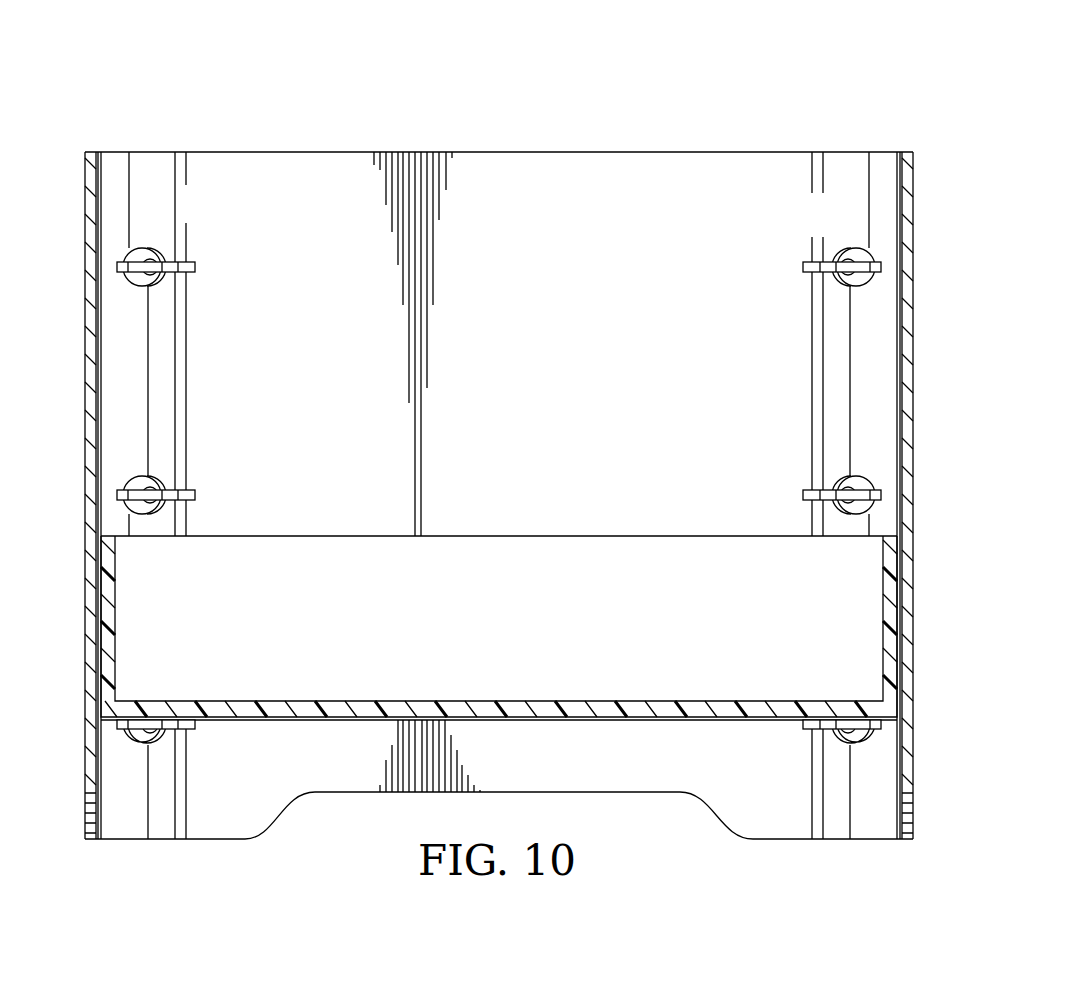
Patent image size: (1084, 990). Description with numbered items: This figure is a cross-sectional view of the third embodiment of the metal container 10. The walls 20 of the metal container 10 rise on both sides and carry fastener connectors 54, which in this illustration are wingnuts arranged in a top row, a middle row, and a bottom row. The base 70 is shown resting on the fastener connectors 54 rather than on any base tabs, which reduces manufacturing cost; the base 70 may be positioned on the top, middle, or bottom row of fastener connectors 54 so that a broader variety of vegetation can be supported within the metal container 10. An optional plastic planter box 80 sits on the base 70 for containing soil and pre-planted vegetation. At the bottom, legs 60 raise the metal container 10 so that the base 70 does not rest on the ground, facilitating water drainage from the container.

The metal container 10 is at (310, 68).
The wall 20 is at (87, 142).
The fastener connector 54 is at (196, 267).
The legs 60 is at (223, 840).
The base 70 is at (314, 735).
The plastic planter box 80 is at (604, 525).